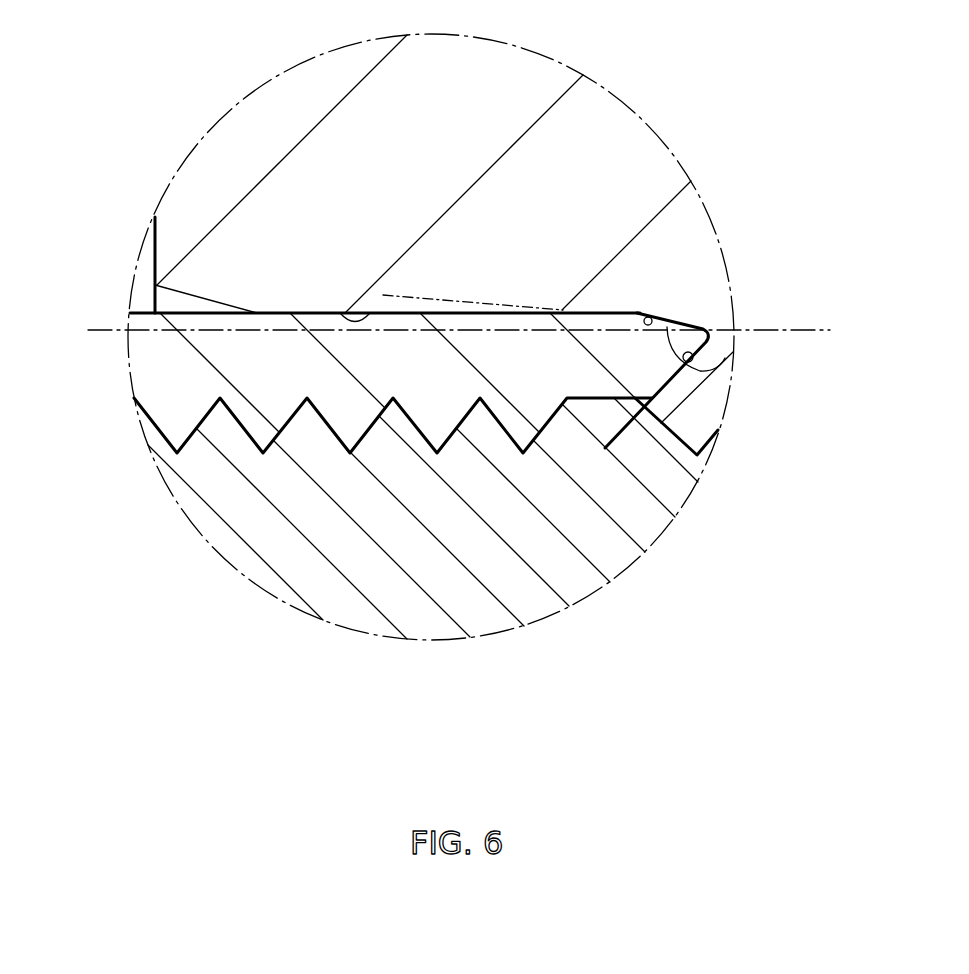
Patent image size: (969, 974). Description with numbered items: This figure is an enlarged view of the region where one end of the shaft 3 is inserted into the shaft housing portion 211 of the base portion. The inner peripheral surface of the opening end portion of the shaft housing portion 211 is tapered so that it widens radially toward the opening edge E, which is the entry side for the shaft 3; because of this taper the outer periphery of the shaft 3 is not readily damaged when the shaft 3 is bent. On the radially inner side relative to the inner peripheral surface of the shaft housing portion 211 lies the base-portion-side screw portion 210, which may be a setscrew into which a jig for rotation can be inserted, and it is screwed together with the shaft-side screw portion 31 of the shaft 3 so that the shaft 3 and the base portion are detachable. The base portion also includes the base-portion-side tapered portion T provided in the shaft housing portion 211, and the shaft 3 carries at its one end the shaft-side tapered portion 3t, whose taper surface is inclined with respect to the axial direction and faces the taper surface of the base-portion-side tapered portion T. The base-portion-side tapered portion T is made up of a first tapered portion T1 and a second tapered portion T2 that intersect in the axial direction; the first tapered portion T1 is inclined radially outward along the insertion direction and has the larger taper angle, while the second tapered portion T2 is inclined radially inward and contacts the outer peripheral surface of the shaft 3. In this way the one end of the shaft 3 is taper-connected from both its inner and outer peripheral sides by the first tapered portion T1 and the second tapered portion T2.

The opening edge E is at (152, 298).
The shaft housing portion 211 is at (340, 312).
The shaft-side tapered portion 3t is at (640, 405).
The shaft 3 is at (183, 373).
The shaft-side screw portion 31 is at (309, 402).
The base-portion-side screw portion 210 is at (297, 553).
The second tapered portion T2 is at (675, 313).
The first tapered portion T1 is at (748, 355).
The base-portion-side tapered portion T is at (840, 213).